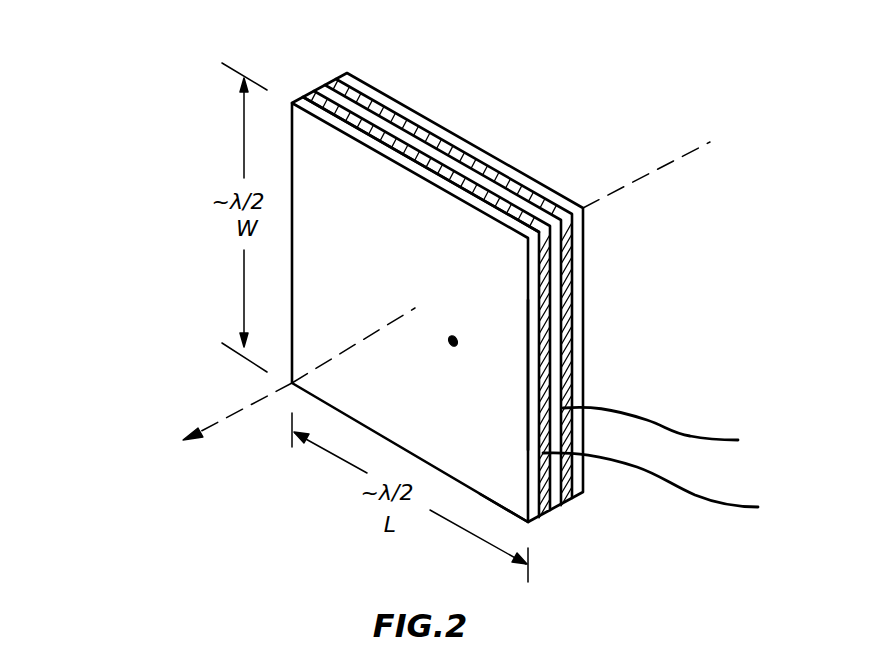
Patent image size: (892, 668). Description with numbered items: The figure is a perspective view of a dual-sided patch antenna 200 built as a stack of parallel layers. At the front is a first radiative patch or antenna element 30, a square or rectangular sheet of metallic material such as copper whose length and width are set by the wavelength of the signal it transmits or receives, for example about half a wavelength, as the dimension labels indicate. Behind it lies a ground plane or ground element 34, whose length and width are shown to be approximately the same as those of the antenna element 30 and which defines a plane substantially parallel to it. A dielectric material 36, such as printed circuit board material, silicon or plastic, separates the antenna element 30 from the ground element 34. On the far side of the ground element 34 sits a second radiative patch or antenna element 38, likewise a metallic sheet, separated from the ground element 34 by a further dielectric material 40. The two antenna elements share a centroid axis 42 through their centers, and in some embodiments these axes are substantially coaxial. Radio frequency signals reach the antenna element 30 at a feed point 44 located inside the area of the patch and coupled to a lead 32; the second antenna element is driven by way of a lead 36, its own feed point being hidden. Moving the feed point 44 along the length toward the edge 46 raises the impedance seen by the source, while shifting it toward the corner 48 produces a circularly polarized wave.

The dual-sided patch antenna 200 is at (595, 66).
The first antenna element 30 is at (415, 309).
The lead 32 is at (680, 487).
The ground element 34 is at (313, 84).
The dielectric material 36 is at (306, 90).
The second antenna element 38 is at (570, 207).
The dielectric material 40 is at (552, 214).
The centroid axis 42 is at (243, 403).
The feed point 44 is at (454, 336).
The edge 46 is at (527, 373).
The corner 48 is at (527, 516).